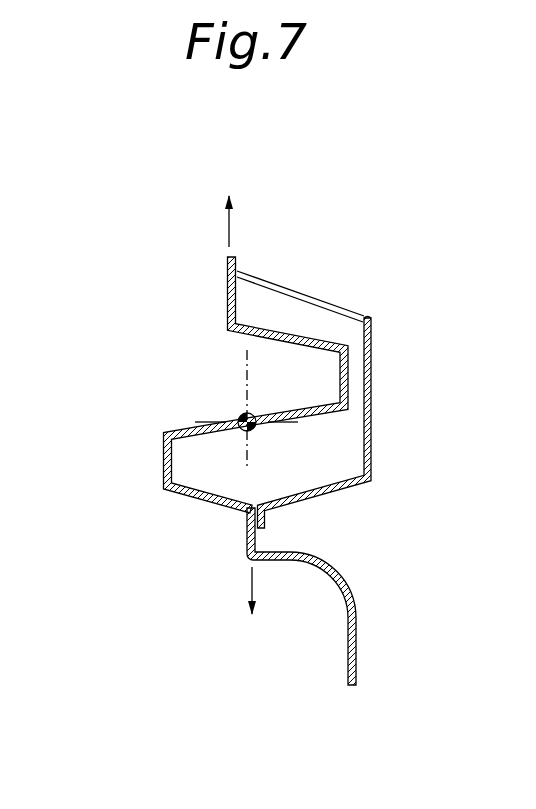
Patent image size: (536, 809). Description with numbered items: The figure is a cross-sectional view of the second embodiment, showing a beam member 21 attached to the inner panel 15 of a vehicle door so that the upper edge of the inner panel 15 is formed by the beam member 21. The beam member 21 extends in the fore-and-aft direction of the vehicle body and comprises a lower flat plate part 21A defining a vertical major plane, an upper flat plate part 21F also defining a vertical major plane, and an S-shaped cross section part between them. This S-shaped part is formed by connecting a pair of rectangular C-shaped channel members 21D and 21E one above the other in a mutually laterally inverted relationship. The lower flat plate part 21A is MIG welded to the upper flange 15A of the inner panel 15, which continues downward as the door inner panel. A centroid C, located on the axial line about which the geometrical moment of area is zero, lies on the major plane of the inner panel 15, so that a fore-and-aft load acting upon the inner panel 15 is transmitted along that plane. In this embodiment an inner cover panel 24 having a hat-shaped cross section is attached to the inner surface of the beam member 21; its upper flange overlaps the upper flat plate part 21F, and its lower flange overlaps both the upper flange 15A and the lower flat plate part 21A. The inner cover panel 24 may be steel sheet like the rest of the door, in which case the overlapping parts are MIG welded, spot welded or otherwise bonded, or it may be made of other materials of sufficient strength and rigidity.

The beam member 21 is at (315, 336).
The upper flat plate part 21F is at (235, 270).
The rectangular C-shaped channel member 21D is at (343, 373).
The rectangular C-shaped channel member 21E is at (163, 462).
The lower flat plate part 21A is at (248, 518).
The centroid C is at (254, 429).
The inner cover panel 24 is at (372, 330).
The inner panel 15 is at (357, 648).
The upper flange 15A is at (265, 538).